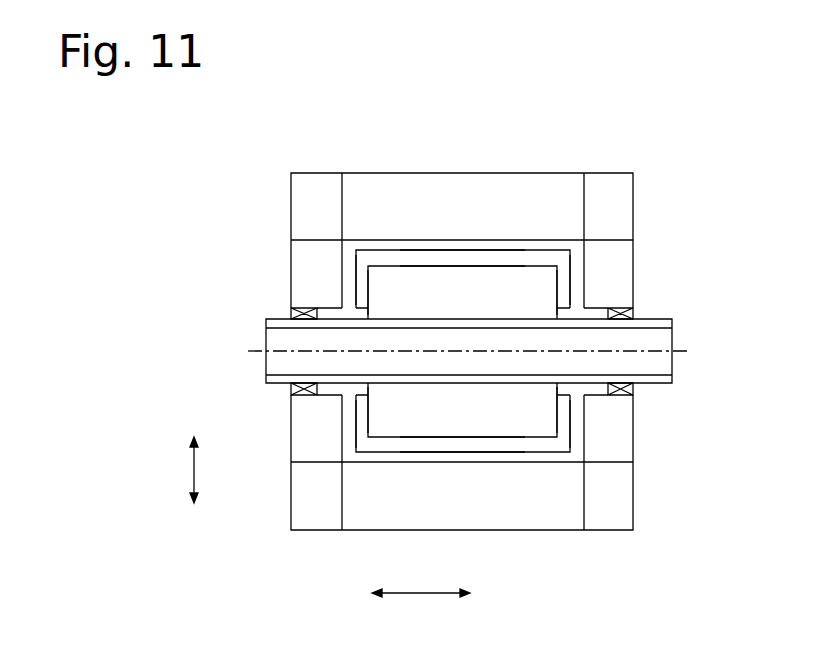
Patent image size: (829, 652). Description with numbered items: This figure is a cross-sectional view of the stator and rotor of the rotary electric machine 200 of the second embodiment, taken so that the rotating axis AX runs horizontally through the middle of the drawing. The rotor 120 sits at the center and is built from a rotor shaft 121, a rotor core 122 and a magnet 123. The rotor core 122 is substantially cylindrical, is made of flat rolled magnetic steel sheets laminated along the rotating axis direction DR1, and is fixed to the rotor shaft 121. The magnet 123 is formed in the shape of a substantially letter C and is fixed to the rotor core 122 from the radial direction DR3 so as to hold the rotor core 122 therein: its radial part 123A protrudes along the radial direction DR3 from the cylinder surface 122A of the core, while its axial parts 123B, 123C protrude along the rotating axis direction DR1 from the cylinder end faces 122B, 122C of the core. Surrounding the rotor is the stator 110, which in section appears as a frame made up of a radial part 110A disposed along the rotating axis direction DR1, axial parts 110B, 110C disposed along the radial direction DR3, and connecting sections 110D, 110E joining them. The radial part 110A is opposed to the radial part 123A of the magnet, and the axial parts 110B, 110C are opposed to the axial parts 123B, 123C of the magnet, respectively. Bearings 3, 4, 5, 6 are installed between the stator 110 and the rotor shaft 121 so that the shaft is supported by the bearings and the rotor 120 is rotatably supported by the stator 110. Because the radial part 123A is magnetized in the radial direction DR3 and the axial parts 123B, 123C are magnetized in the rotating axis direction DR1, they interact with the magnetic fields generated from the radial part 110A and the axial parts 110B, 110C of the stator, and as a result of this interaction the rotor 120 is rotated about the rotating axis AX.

The rotary electric machine 200 is at (486, 101).
The stator 110 is at (634, 186).
The radial part 110A is at (442, 174).
The axial part 110B is at (623, 250).
The axial part 110C is at (303, 255).
The connecting section 110D is at (600, 185).
The connecting section 110E is at (313, 173).
The rotor 120 is at (403, 428).
The rotor shaft 121 is at (672, 335).
The rotor core 122 is at (543, 302).
The cylinder surface 122A is at (453, 268).
The cylinder end face 122B is at (555, 287).
The cylinder end face 122C is at (372, 308).
The magnet 123 is at (392, 257).
The radial part 123A is at (508, 250).
The axial part 123B is at (572, 277).
The axial part 123C is at (353, 280).
The bearing 3 is at (633, 312).
The bearing 4 is at (633, 390).
The bearing 5 is at (292, 313).
The bearing 6 is at (292, 390).
The rotating axis AX is at (678, 350).
The rotating axis direction DR1 is at (417, 597).
The radial direction DR3 is at (192, 468).